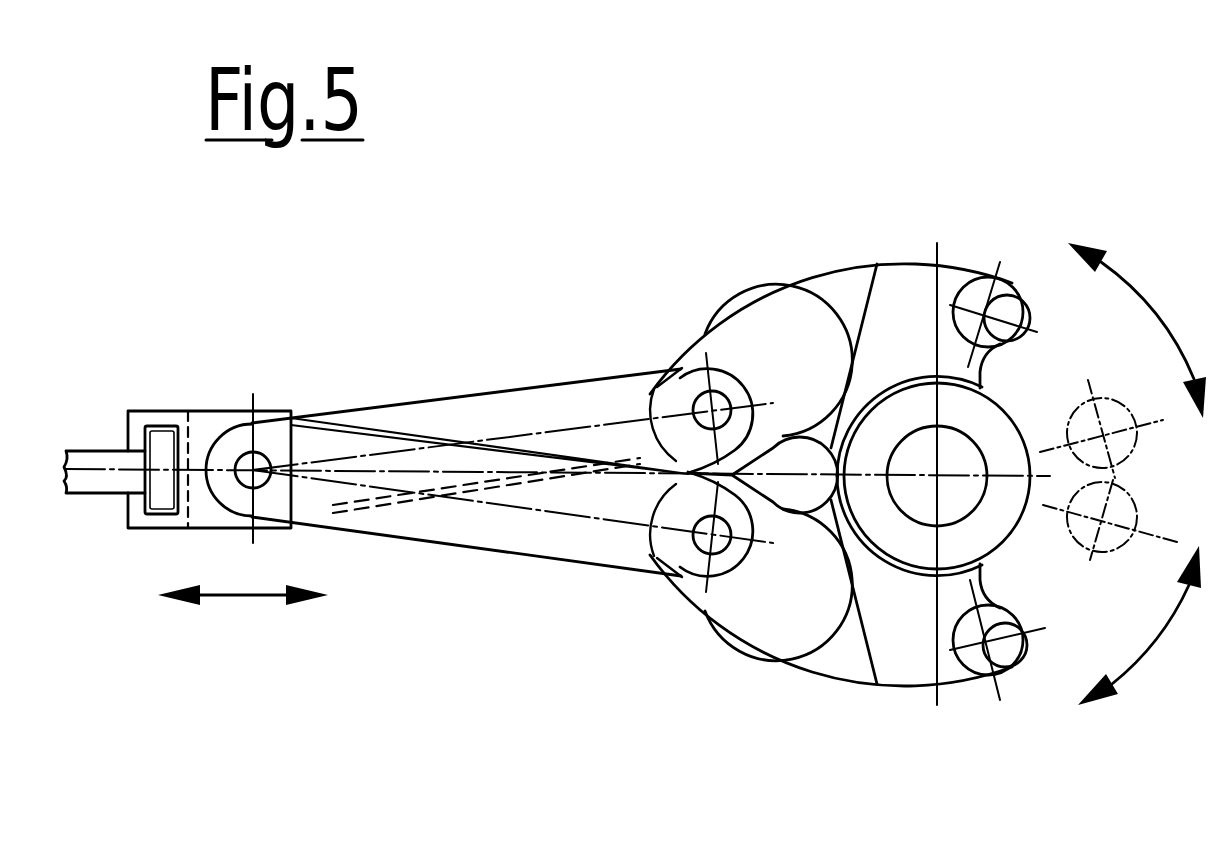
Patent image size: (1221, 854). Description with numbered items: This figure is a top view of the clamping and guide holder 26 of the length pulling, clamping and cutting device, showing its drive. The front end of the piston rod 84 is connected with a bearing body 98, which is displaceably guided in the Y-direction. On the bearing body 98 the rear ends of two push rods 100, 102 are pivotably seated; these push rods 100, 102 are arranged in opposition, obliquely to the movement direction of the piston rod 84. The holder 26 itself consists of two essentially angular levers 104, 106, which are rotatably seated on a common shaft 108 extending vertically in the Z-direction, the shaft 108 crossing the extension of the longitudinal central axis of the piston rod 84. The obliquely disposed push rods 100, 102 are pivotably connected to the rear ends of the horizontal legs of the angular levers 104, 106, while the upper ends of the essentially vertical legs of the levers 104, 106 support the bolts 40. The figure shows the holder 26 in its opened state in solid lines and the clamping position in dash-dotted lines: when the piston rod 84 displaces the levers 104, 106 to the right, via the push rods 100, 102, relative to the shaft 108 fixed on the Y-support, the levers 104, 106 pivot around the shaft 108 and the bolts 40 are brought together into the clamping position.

The holder 26 is at (912, 244).
The bolts 40 is at (1008, 282).
The piston rod 84 is at (92, 457).
The bearing body 98 is at (211, 425).
The push rod 100 is at (508, 407).
The push rod 102 is at (508, 540).
The angular lever 104 is at (798, 303).
The angular lever 106 is at (788, 642).
The shaft 108 is at (945, 483).